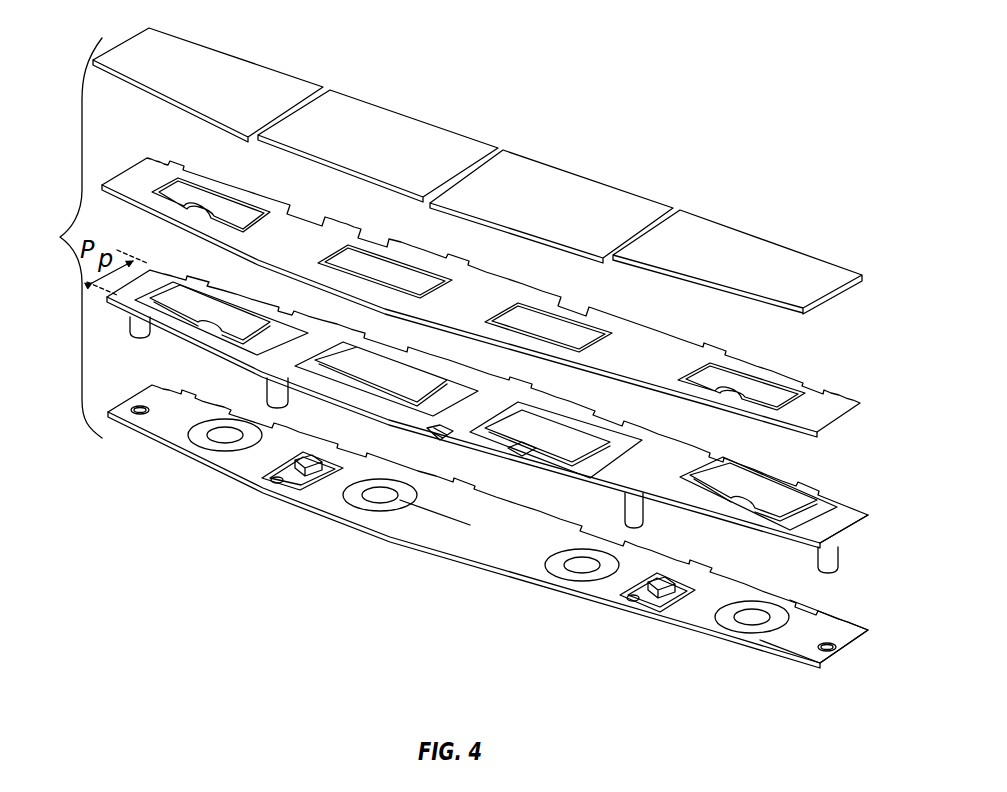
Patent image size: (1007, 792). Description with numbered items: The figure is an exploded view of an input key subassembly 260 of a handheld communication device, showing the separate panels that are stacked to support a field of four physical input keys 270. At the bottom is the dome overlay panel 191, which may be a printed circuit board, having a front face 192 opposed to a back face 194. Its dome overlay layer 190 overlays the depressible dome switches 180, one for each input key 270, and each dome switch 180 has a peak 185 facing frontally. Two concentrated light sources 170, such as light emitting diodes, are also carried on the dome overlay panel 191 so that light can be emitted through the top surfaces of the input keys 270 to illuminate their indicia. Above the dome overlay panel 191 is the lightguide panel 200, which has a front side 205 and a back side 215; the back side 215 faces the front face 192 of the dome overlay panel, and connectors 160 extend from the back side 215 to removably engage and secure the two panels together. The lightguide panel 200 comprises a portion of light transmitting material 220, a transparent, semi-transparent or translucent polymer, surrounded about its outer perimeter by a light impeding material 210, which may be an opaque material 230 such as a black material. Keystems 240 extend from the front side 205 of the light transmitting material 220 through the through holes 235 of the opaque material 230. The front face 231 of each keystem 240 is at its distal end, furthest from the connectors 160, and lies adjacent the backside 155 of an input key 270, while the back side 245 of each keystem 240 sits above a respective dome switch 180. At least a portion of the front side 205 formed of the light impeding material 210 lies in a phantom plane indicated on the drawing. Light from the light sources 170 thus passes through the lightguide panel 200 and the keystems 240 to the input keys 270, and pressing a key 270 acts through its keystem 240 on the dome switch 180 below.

The backside of an input key 155 is at (486, 171).
The connector 160 is at (266, 390).
The concentrated light source 170 is at (262, 496).
The depressible dome switch 180 is at (447, 547).
The peak 185 is at (382, 489).
The dome overlay layer 190 is at (486, 540).
The dome overlay panel 191 is at (796, 642).
The front face 192 is at (432, 509).
The back face 194 is at (420, 555).
The lightguide panel 200 is at (488, 440).
The front side 205 is at (850, 519).
The light impeding material 210 is at (556, 423).
The back side 215 is at (851, 542).
The light transmitting material 220 is at (294, 347).
The opaque material 230 is at (493, 297).
The front face of the keystem 231 is at (529, 426).
The through hole 235 is at (722, 384).
The keystem 240 is at (580, 441).
The back side of the keystem 245 is at (524, 458).
The input key subassembly 260 is at (60, 237).
The input key 270 is at (810, 246).